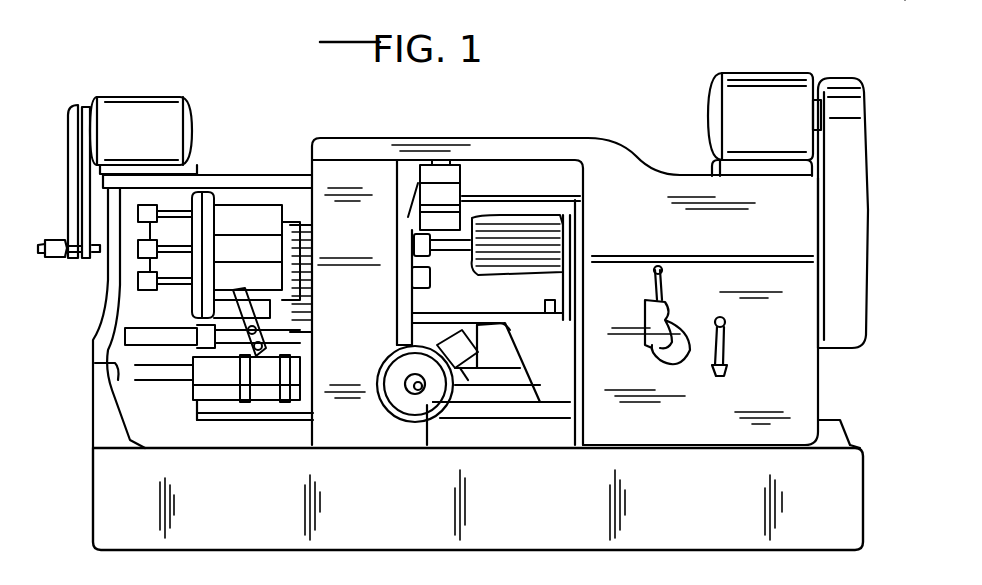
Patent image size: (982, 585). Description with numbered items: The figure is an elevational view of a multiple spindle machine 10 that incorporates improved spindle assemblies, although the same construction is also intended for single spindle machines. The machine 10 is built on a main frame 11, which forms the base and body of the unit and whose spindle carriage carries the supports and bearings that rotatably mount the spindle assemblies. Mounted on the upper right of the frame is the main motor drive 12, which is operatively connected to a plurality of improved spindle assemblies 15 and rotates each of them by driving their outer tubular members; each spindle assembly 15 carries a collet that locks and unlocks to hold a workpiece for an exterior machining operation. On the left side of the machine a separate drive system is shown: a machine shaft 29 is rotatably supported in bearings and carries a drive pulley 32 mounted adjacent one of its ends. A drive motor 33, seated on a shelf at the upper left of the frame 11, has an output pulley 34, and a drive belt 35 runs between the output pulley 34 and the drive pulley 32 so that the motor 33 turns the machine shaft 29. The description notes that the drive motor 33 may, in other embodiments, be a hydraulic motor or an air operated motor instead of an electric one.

The multiple spindle machine 10 is at (557, 136).
The main frame 11 is at (553, 512).
The main motor drive 12 is at (754, 60).
The spindle assembly 15 is at (428, 245).
The machine shaft 29 is at (93, 262).
The drive pulley 32 is at (88, 258).
The drive motor 33 is at (195, 132).
The output pulley 34 is at (88, 105).
The drive belt 35 is at (75, 105).